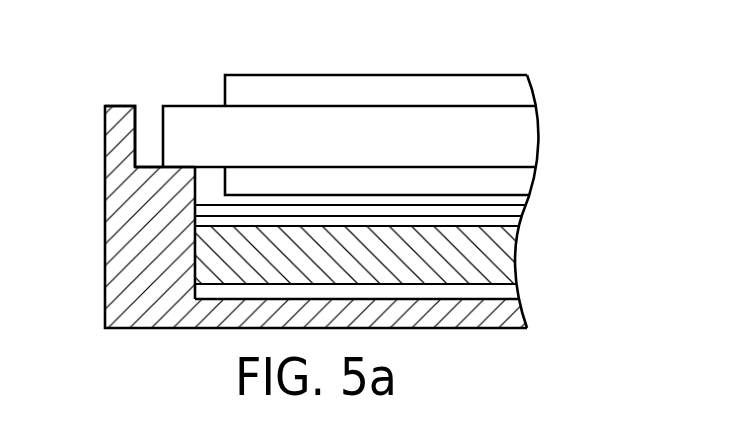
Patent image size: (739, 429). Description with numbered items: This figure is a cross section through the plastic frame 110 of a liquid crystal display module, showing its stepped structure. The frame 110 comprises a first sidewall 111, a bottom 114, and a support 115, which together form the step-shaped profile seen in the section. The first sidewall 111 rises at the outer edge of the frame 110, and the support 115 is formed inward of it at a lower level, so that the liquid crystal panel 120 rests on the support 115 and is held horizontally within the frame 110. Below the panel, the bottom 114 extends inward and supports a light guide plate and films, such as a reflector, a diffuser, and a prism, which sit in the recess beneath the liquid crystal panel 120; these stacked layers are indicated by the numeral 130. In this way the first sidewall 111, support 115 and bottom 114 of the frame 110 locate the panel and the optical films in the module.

The frame 110 is at (98, 31).
The first sidewall 111 is at (124, 136).
The bottom 114 is at (488, 300).
The support 115 is at (150, 166).
The liquid crystal panel 120 is at (522, 136).
The adhesive / intermediate layer 130 is at (503, 212).